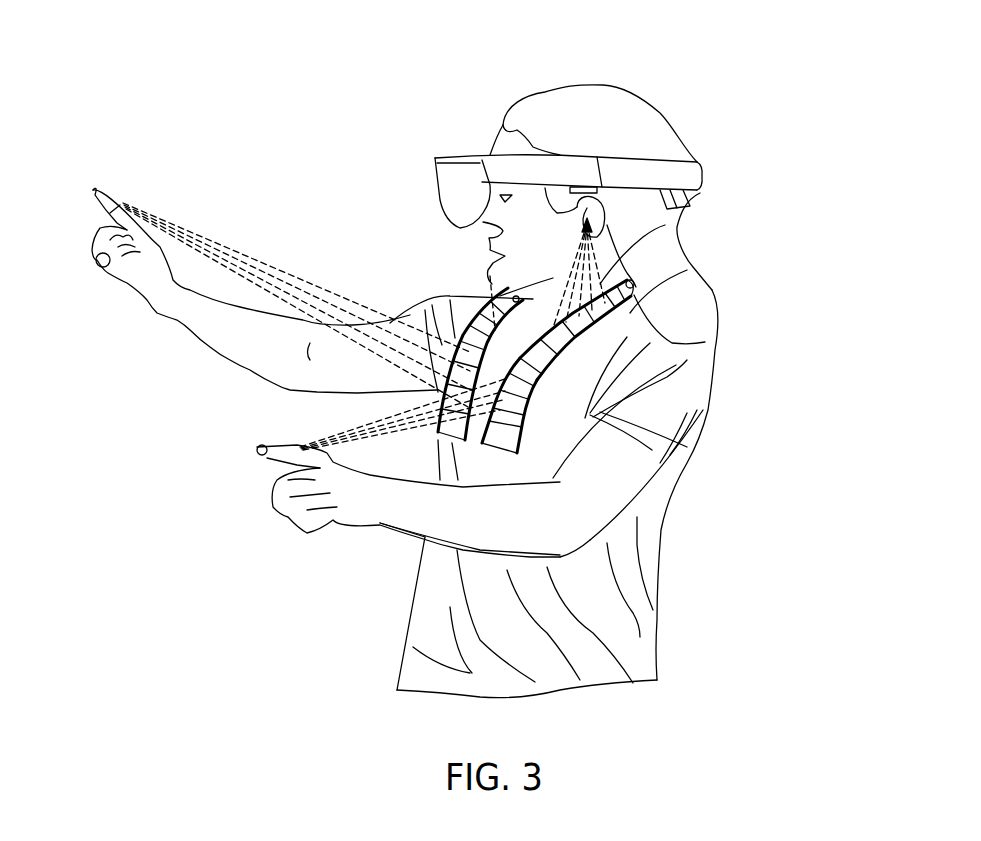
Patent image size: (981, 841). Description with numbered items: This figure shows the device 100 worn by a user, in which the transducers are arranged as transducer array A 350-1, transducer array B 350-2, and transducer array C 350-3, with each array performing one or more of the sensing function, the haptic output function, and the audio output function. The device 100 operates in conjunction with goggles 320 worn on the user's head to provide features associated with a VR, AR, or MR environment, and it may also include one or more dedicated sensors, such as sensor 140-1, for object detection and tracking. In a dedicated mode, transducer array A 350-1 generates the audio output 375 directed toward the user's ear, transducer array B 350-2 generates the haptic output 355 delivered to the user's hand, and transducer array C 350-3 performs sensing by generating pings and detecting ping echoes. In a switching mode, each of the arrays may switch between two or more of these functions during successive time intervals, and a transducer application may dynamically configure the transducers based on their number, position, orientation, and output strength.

The goggles 320 is at (449, 152).
The haptic output 355 is at (211, 236).
The audio output 375 is at (466, 297).
The device 100 is at (669, 456).
The sensor 140-1 is at (625, 272).
The transducer array A 350-1 is at (604, 334).
The transducer array B 350-2 is at (532, 412).
The transducer array C 350-3 is at (523, 447).